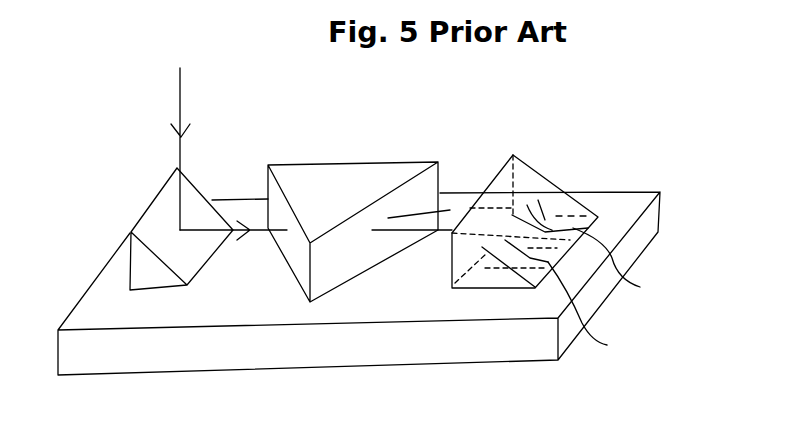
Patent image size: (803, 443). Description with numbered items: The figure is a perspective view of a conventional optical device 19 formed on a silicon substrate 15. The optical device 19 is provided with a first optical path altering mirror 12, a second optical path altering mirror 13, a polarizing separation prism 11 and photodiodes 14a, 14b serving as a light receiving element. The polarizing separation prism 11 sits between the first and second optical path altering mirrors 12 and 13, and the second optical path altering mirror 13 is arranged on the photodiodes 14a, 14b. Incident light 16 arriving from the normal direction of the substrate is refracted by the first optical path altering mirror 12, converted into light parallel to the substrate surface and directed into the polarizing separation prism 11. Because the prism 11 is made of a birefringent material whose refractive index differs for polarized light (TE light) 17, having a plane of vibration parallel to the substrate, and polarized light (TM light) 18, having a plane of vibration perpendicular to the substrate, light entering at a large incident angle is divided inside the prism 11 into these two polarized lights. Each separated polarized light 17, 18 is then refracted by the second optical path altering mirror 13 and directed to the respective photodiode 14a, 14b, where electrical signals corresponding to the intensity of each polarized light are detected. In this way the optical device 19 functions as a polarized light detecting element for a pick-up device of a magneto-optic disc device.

The polarizing separation prism 11 is at (332, 172).
The first optical path altering mirror 12 is at (142, 260).
The second optical path altering mirror 13 is at (532, 170).
The photodiode 14a is at (650, 266).
The photodiode 14b is at (623, 312).
The silicon substrate 15 is at (323, 348).
The incident light 16 is at (182, 90).
The polarized light (TE light) 17 is at (448, 213).
The polarized light (TM light) 18 is at (446, 229).
The optical device 19 is at (603, 157).